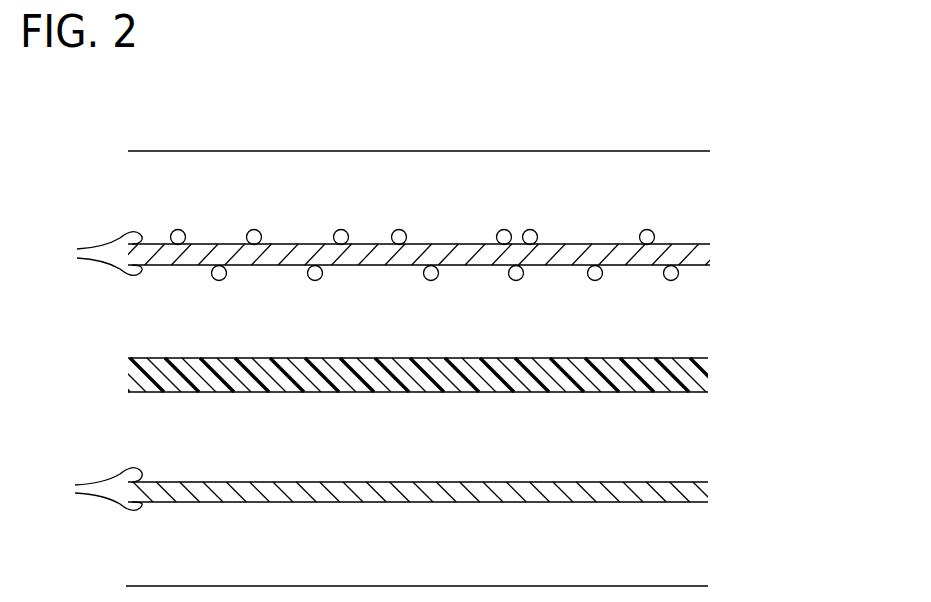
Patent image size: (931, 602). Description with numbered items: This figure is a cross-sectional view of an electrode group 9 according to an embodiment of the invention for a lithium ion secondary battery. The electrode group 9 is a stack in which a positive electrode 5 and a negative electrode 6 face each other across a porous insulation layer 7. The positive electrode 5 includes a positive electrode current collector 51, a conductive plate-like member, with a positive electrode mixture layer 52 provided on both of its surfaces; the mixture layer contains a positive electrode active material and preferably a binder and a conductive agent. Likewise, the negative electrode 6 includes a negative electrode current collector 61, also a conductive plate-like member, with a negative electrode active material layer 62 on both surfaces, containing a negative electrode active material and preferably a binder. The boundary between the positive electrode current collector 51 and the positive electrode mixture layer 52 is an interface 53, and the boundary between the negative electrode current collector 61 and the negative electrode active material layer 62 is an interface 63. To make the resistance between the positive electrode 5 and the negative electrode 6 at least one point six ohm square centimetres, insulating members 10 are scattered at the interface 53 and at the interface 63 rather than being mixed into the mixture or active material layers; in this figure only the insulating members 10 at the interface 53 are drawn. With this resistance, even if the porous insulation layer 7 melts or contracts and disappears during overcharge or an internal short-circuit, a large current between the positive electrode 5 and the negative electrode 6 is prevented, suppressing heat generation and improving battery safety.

The electrode group 9 is at (554, 111).
The positive electrode 5 is at (803, 185).
The positive electrode current collector 51 is at (710, 255).
The positive electrode mixture layer 52 is at (697, 195).
The interface 53 is at (91, 254).
The insulating members 10 is at (344, 231).
The porous insulation layer 7 is at (708, 376).
The negative electrode 6 is at (800, 422).
The negative electrode current collector 61 is at (708, 492).
The negative electrode active material layer 62 is at (697, 432).
The interface 63 is at (90, 489).